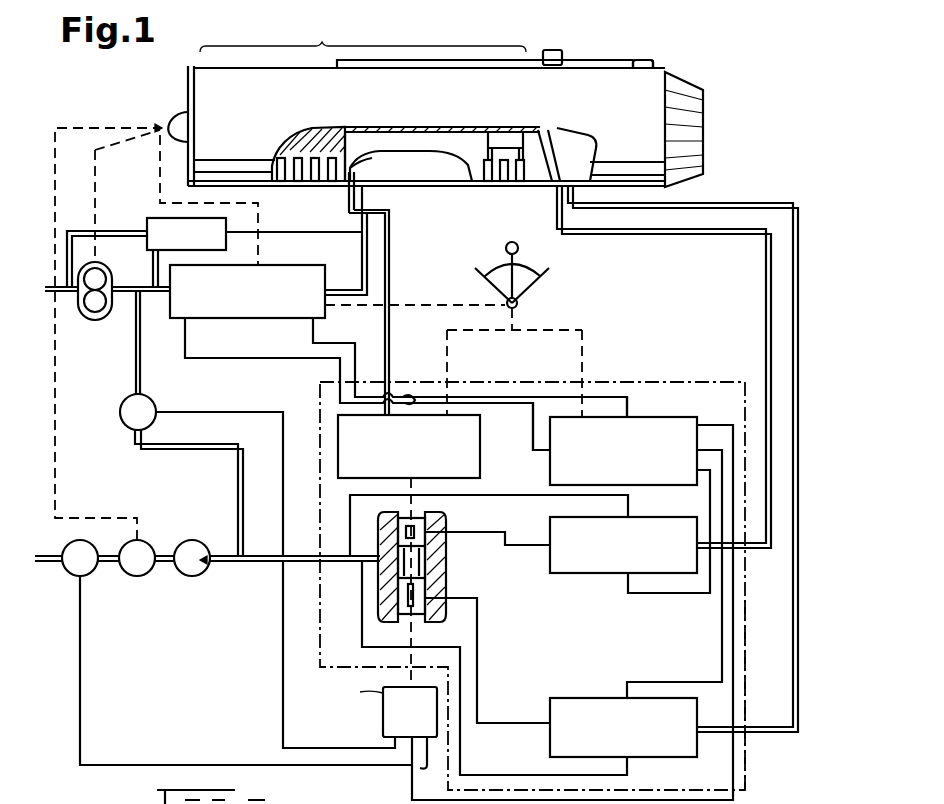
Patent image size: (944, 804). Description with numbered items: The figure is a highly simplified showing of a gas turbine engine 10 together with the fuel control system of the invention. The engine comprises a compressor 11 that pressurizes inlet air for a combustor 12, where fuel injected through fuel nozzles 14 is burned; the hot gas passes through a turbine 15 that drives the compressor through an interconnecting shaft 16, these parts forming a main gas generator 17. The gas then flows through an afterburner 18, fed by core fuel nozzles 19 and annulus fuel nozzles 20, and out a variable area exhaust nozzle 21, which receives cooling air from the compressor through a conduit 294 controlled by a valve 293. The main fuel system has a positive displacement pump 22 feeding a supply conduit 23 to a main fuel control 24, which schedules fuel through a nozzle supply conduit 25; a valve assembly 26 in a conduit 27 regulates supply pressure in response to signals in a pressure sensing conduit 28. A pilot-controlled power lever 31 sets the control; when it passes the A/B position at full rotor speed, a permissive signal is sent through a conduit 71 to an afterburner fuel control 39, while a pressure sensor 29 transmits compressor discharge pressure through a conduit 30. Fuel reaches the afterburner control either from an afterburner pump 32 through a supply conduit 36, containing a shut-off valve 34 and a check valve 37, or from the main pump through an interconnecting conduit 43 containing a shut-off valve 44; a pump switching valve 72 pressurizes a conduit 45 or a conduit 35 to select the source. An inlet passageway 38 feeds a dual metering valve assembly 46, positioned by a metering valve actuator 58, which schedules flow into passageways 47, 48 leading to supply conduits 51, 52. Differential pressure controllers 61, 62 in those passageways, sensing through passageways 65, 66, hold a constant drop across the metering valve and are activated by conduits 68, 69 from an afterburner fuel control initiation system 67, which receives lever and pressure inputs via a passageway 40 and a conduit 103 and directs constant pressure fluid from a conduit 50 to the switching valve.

The gas turbine engine 10 is at (610, 55).
The compressor 11 is at (298, 196).
The combustor 12 is at (404, 186).
The fuel nozzles 14 is at (378, 154).
The turbine 15 is at (503, 195).
The interconnecting shaft 16 is at (466, 127).
The main gas generator 17 is at (363, 38).
The afterburner 18 is at (644, 54).
The core fuel nozzles 19 is at (560, 148).
The annulus fuel nozzles 20 is at (594, 152).
The variable area exhaust nozzle 21 is at (690, 78).
The positive displacement pump 22 is at (86, 322).
The supply conduit 23 is at (122, 284).
The main fuel control 24 is at (241, 326).
The nozzle supply conduit 25 is at (360, 250).
The valve assembly 26 is at (146, 220).
The conduit 27 is at (104, 244).
The pressure sensing conduit 28 is at (284, 237).
The pressure sensor 29 is at (346, 183).
The conduit 30 is at (390, 264).
The power lever 31 is at (522, 296).
The afterburner pump 32 is at (144, 542).
The shut-off valve 34 is at (86, 574).
The conduit 35 is at (82, 640).
The supply conduit 36 is at (212, 574).
The check valve 37 is at (184, 574).
The inlet passageway 38 is at (294, 568).
The afterburner fuel control 39 is at (748, 756).
The passageway 40 is at (500, 396).
The interconnecting conduit 43 is at (188, 454).
The shut-off valve 44 is at (156, 400).
The conduit 45 is at (282, 640).
The dual metering valve assembly 46 is at (460, 580).
The passageway 47 is at (478, 534).
The passageway 48 is at (478, 634).
The conduit 50 is at (496, 413).
The supply conduit 51 is at (765, 342).
The supply conduit 52 is at (800, 342).
The metering valve actuator 58 is at (482, 454).
The metering valve differential pressure controller 61 is at (574, 576).
The metering valve differential pressure controller 62 is at (600, 697).
The passageway 65 is at (516, 496).
The passageway 66 is at (506, 770).
The afterburner fuel control initiation system 67 is at (676, 416).
The conduit 68 is at (654, 598).
The conduit 69 is at (662, 682).
The conduit 71 is at (342, 346).
The pump switching valve 72 is at (515, 612).
The conduit 103 is at (412, 402).
The valve 293 is at (555, 45).
The conduit 294 is at (572, 58).